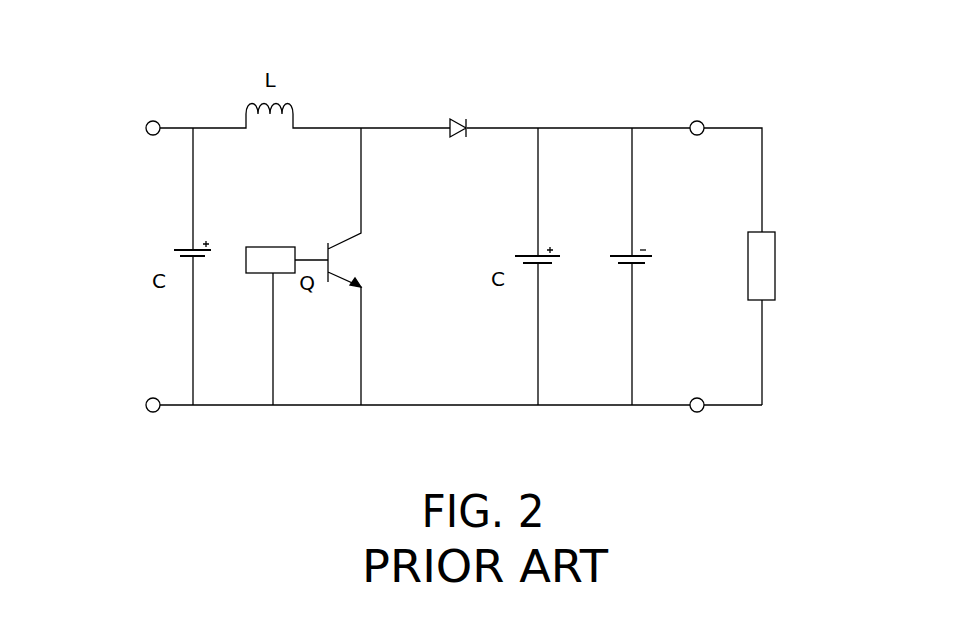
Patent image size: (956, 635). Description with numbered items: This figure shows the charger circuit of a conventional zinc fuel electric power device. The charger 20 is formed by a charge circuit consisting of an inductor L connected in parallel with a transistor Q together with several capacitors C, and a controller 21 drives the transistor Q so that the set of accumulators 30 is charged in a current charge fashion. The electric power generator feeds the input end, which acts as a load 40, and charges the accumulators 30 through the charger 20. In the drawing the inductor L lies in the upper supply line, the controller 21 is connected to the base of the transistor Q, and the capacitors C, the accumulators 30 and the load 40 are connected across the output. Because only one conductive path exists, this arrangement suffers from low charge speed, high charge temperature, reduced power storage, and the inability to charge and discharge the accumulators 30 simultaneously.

The charger 20 is at (625, 108).
The controller 21 is at (278, 247).
The set of accumulators 30 is at (657, 255).
The load 40 is at (770, 284).